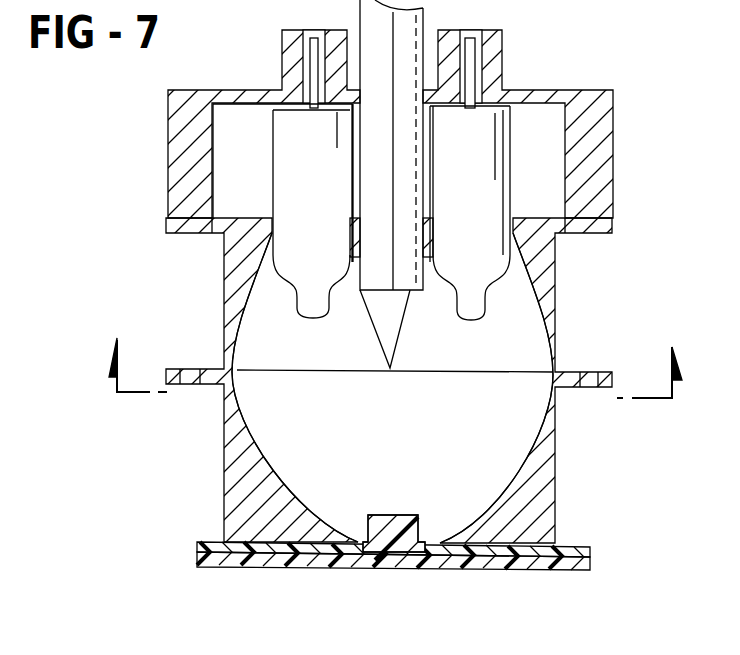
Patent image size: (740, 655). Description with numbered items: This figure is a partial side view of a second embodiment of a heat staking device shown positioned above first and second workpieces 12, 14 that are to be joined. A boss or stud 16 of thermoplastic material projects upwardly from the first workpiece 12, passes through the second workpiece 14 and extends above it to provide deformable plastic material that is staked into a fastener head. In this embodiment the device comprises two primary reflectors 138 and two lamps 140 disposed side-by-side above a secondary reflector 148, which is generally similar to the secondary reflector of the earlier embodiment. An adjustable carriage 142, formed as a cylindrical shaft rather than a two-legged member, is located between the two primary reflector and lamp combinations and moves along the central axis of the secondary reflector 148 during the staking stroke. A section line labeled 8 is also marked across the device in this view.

The section line 8- 8 is at (395, 370).
The first workpiece 12 is at (590, 563).
The second workpiece 14 is at (590, 550).
The boss or stud 16 is at (420, 523).
The primary reflector 138 is at (235, 250).
The lamp 140 is at (293, 167).
The adjustable carriage 142 is at (403, 26).
The secondary reflector 148 is at (285, 472).